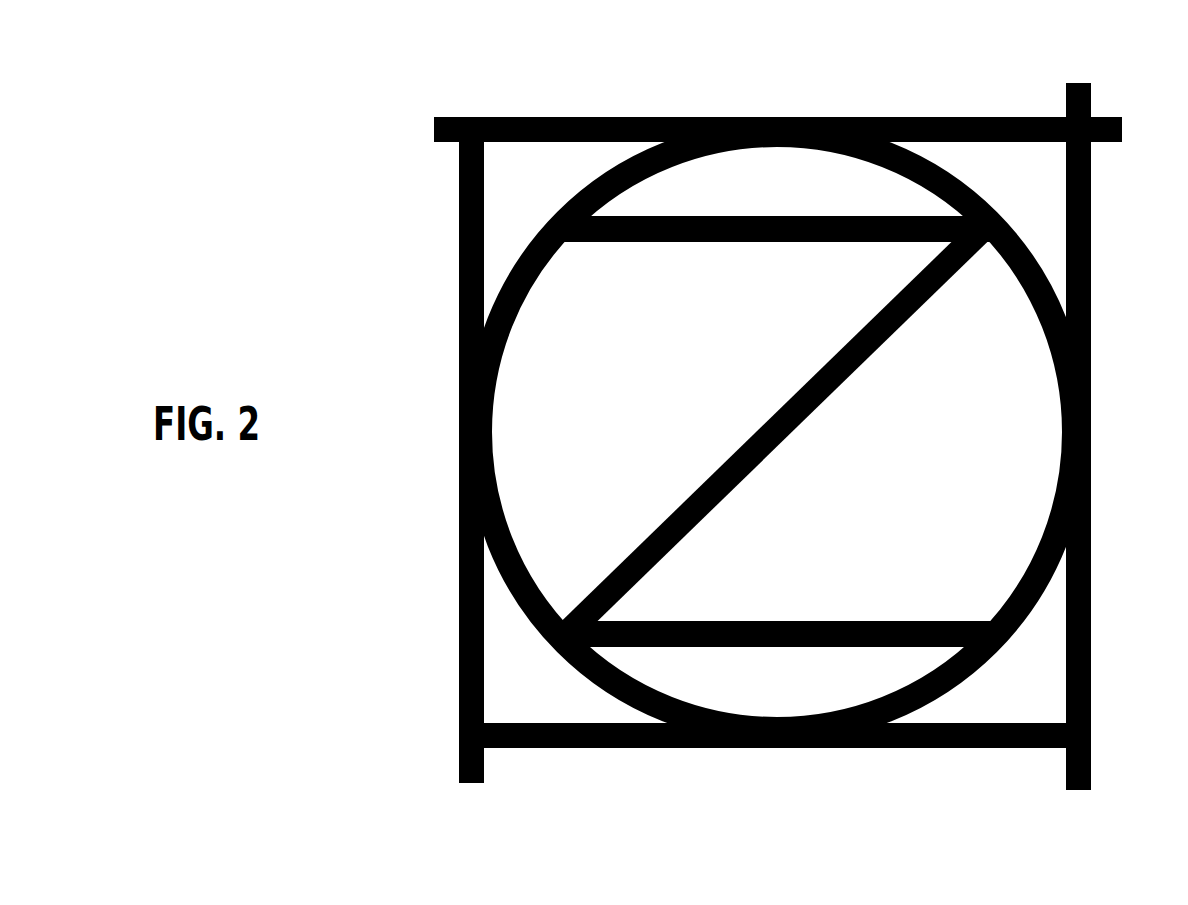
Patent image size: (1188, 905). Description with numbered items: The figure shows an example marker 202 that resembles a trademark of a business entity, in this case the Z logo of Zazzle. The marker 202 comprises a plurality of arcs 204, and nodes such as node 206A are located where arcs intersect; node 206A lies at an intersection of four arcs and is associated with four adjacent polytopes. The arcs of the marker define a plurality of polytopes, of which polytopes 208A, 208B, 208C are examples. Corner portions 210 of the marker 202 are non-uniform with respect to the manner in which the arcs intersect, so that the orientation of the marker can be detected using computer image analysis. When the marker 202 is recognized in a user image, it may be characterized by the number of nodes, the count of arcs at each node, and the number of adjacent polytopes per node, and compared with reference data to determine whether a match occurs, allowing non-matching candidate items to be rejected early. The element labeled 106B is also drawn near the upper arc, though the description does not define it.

The marker 202 is at (843, 104).
The corner portions 210 is at (468, 105).
The node 206A is at (986, 193).
The upper cross bar 106B is at (579, 252).
The arcs 204 is at (956, 271).
The polytope 208A is at (777, 193).
The polytope 208B is at (550, 193).
The polytope 208C is at (645, 393).